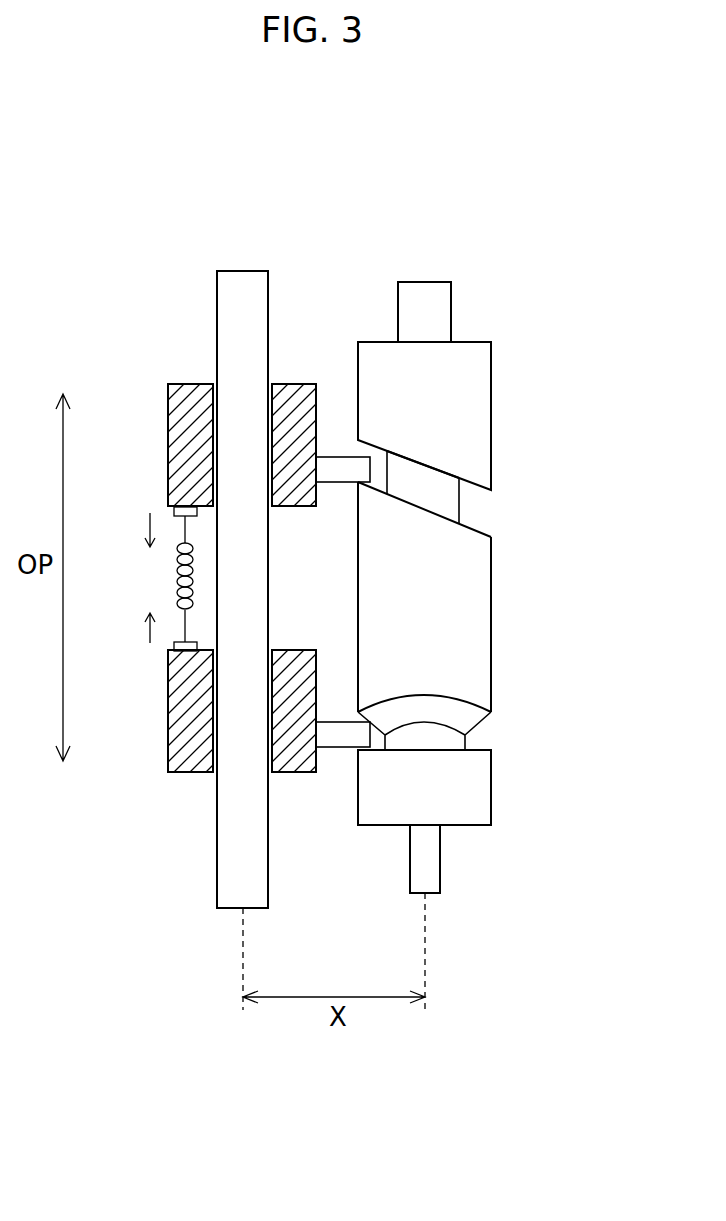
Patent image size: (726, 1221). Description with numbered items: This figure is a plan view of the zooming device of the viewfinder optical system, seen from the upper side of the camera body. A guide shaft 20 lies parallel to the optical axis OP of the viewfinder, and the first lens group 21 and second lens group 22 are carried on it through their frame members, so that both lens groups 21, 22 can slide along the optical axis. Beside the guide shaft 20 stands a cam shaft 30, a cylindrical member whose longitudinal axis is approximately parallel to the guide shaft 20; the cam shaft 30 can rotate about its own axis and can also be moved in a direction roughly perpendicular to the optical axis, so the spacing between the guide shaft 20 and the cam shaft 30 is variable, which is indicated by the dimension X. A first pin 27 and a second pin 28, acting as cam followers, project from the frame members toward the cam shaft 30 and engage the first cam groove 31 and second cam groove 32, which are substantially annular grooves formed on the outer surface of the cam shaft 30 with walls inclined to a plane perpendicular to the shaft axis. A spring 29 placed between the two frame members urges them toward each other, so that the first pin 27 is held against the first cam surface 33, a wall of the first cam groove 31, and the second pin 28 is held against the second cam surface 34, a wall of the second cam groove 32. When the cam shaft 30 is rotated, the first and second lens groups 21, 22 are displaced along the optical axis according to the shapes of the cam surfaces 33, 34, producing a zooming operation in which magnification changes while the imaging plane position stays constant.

The guide shaft 20 is at (243, 271).
The first lens group 21 is at (168, 708).
The second lens group 22 is at (168, 445).
The first pin 27 is at (343, 737).
The second pin 28 is at (345, 468).
The spring 29 is at (176, 574).
The cam shaft 30 is at (504, 619).
The first cam groove 31 is at (452, 740).
The second cam groove 32 is at (462, 505).
The first cam surface 33 is at (467, 713).
The second cam surface 34 is at (423, 507).